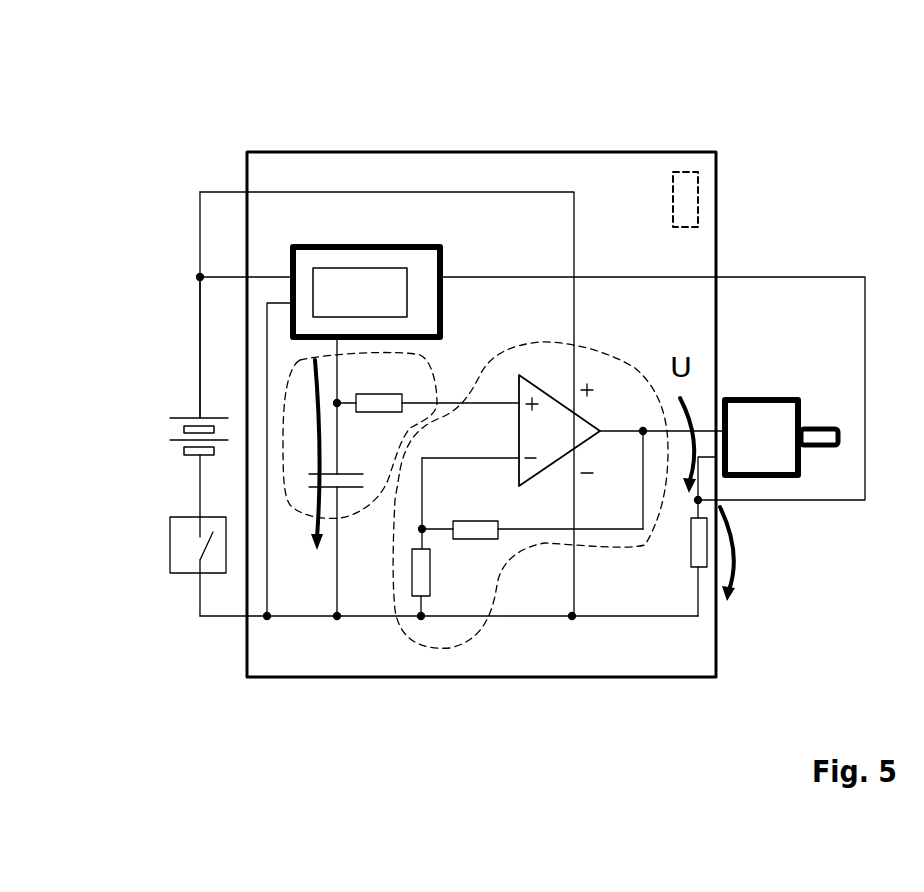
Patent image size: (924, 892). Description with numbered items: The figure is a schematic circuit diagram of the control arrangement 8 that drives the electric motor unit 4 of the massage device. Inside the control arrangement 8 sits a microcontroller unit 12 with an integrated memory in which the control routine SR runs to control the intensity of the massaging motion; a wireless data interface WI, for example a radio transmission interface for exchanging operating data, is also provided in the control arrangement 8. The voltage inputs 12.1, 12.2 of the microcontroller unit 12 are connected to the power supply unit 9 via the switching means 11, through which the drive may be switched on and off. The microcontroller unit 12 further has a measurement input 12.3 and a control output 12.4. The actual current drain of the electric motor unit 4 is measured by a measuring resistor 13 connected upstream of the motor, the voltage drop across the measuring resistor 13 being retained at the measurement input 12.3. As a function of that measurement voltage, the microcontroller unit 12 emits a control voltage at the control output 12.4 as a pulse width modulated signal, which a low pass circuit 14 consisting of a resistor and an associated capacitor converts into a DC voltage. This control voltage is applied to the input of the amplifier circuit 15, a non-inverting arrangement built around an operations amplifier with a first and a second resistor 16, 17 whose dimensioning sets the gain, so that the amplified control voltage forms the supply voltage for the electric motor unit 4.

The control arrangement 8 is at (481, 362).
The microcontroller unit 12 is at (368, 247).
The voltage input 12.1 is at (282, 268).
The voltage input 12.2 is at (283, 297).
The measurement input 12.3 is at (443, 270).
The control output 12.4 is at (330, 337).
The wireless data interface WI is at (687, 197).
The power supply unit 9 is at (148, 447).
The switching means 11 is at (157, 572).
The low pass circuit 14 is at (298, 515).
The amplifier circuit 15 is at (533, 577).
The first resistor 16 is at (482, 530).
The second resistor 17 is at (417, 577).
The electric motor unit 4 is at (745, 440).
The measuring resistor 13 is at (700, 545).